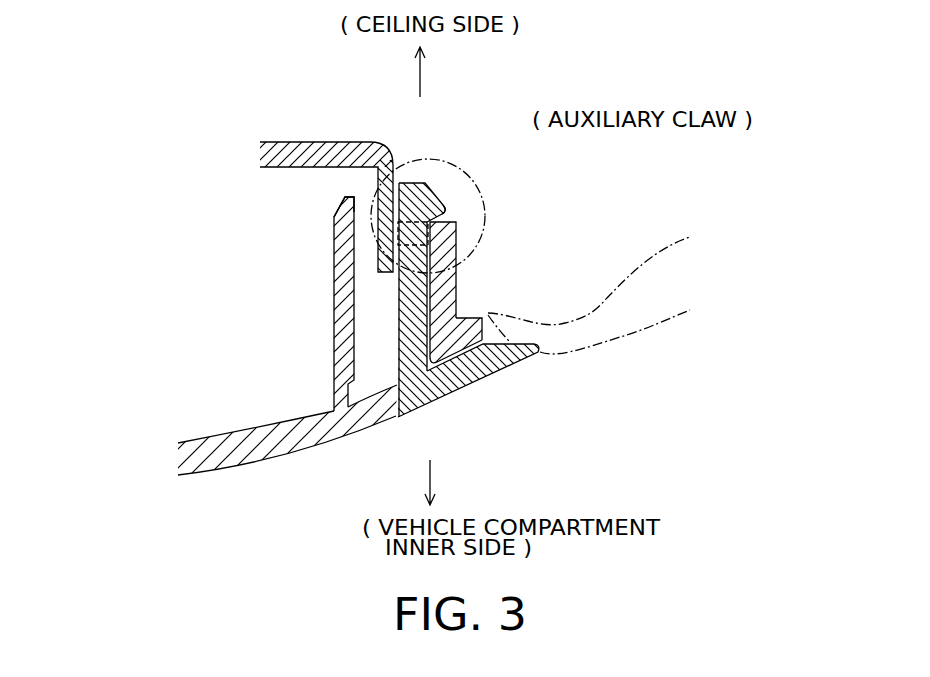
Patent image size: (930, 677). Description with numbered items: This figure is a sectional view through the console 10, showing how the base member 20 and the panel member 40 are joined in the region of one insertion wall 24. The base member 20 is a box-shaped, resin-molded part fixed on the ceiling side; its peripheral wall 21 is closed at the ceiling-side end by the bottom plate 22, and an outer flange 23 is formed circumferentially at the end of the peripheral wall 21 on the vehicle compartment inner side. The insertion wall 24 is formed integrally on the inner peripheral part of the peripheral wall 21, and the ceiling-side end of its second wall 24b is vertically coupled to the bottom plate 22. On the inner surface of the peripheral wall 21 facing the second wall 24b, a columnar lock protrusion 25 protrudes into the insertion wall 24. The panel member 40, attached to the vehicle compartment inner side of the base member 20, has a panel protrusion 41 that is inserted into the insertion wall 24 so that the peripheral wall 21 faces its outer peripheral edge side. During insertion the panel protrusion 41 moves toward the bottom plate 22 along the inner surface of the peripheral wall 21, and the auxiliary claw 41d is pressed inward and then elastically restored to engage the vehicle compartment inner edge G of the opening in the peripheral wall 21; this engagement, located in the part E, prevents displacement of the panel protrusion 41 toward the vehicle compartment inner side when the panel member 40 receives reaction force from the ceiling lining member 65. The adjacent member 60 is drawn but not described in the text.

The console 10 is at (498, 238).
The base member 20 is at (287, 142).
The bottom plate 22 is at (322, 142).
The insertion wall 24 is at (395, 265).
The second wall 24b is at (376, 228).
The lock protrusion 25 is at (399, 222).
The peripheral wall 21 is at (457, 289).
The outer flange 23 is at (480, 314).
The panel member 40 is at (473, 399).
The panel protrusion 41 is at (405, 315).
The auxiliary claw 41d is at (429, 186).
The trim panel 60 is at (290, 454).
The ceiling lining member 65 is at (643, 257).
The part E is at (470, 173).
The vehicle compartment inner edge G is at (446, 212).